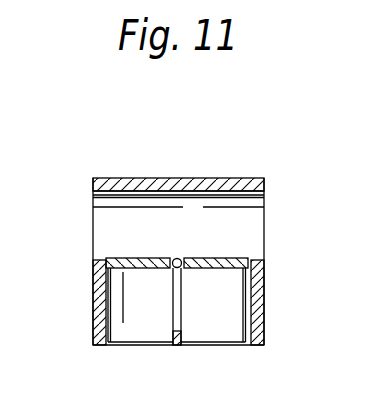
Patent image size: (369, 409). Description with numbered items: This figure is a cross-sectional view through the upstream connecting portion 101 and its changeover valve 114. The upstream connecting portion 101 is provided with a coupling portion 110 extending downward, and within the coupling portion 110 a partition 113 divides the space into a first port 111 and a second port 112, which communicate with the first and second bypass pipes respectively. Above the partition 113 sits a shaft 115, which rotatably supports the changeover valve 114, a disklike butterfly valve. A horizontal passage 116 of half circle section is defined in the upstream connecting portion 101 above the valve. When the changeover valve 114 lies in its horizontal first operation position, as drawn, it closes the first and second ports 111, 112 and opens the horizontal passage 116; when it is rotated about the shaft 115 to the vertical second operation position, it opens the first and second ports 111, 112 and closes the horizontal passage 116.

The upstream connecting portion 101 is at (257, 179).
The coupling portion 110 is at (94, 321).
The first port 111 is at (139, 338).
The second port 112 is at (237, 318).
The partition 113 is at (182, 335).
The changeover valve 114 is at (246, 268).
The shaft 115 is at (183, 261).
The horizontal passage 116 is at (168, 198).